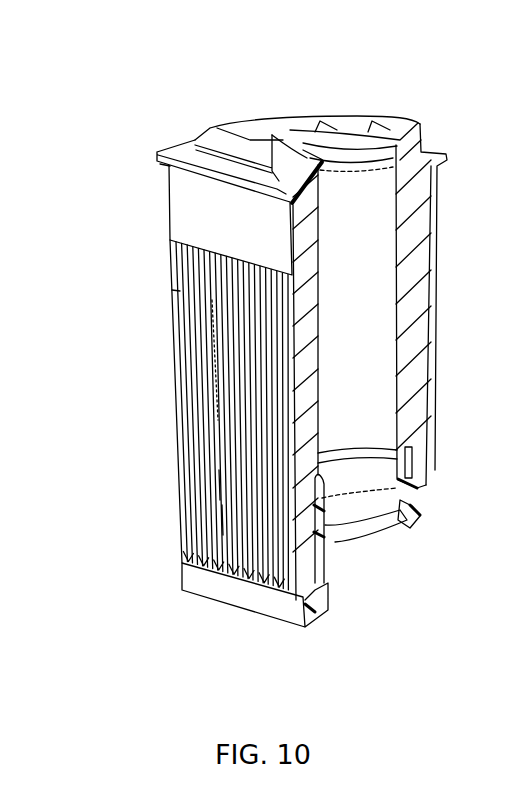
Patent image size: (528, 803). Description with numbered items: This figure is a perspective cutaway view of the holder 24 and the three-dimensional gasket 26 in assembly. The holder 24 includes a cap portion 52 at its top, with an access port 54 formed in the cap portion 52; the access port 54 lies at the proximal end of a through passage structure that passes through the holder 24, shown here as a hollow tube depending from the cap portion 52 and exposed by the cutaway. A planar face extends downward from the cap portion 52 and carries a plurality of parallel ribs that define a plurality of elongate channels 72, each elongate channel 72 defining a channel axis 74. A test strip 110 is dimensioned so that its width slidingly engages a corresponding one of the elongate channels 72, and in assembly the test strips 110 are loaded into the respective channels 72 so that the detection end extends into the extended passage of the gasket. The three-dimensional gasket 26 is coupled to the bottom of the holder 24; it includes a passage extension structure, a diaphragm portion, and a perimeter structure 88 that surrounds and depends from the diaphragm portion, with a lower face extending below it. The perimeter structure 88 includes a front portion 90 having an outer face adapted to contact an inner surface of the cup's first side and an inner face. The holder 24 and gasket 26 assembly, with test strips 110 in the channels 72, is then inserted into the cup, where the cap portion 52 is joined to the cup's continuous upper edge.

The holder 24 is at (172, 285).
The three-dimensional gasket 26 is at (332, 560).
The cap portion 52 is at (226, 128).
The access port 54 is at (355, 118).
The elongate channels 72 is at (215, 408).
The channel axis 74 is at (218, 497).
The perimeter structure 88 is at (420, 499).
The front portion 90 is at (233, 592).
The test strip 110 is at (242, 362).